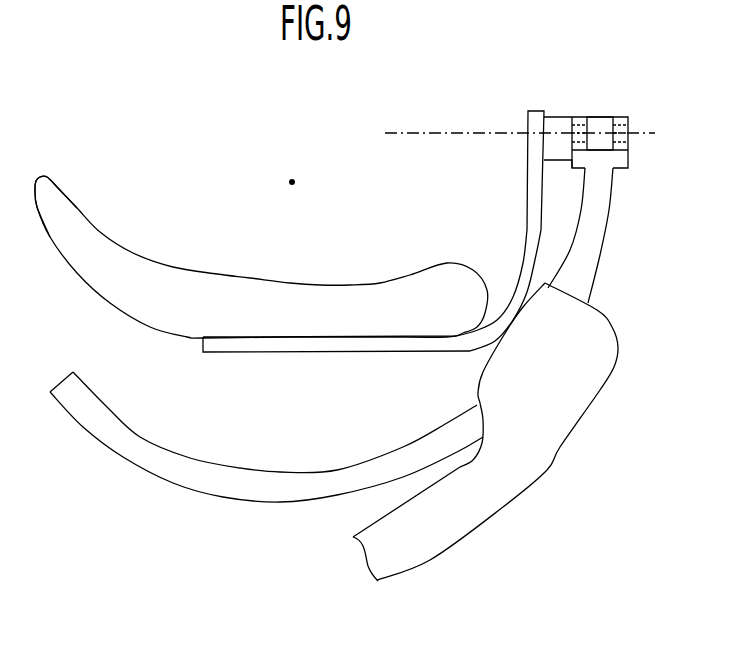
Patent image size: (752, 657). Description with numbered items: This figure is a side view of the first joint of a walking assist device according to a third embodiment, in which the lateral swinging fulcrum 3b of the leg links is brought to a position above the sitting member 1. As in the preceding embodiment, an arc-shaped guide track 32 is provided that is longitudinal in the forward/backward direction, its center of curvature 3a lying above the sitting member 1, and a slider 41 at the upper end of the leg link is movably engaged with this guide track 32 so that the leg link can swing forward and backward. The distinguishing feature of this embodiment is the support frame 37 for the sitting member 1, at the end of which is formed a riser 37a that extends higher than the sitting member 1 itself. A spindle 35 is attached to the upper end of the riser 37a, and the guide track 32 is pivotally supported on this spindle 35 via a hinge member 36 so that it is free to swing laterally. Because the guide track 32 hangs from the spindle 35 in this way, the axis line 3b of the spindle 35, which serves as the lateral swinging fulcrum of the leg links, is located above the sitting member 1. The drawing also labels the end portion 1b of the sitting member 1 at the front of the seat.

The sitting member 1 is at (256, 266).
The tip end portion of pedal body 1b is at (77, 209).
The center of curvature 3a is at (292, 180).
The lateral swinging fulcrum 3b is at (448, 132).
The guide track 32 is at (173, 473).
The spindle 35 is at (589, 116).
The hinge member 36 is at (606, 117).
The support frame 37 is at (310, 352).
The riser 37a is at (529, 110).
The slider 41 is at (582, 390).